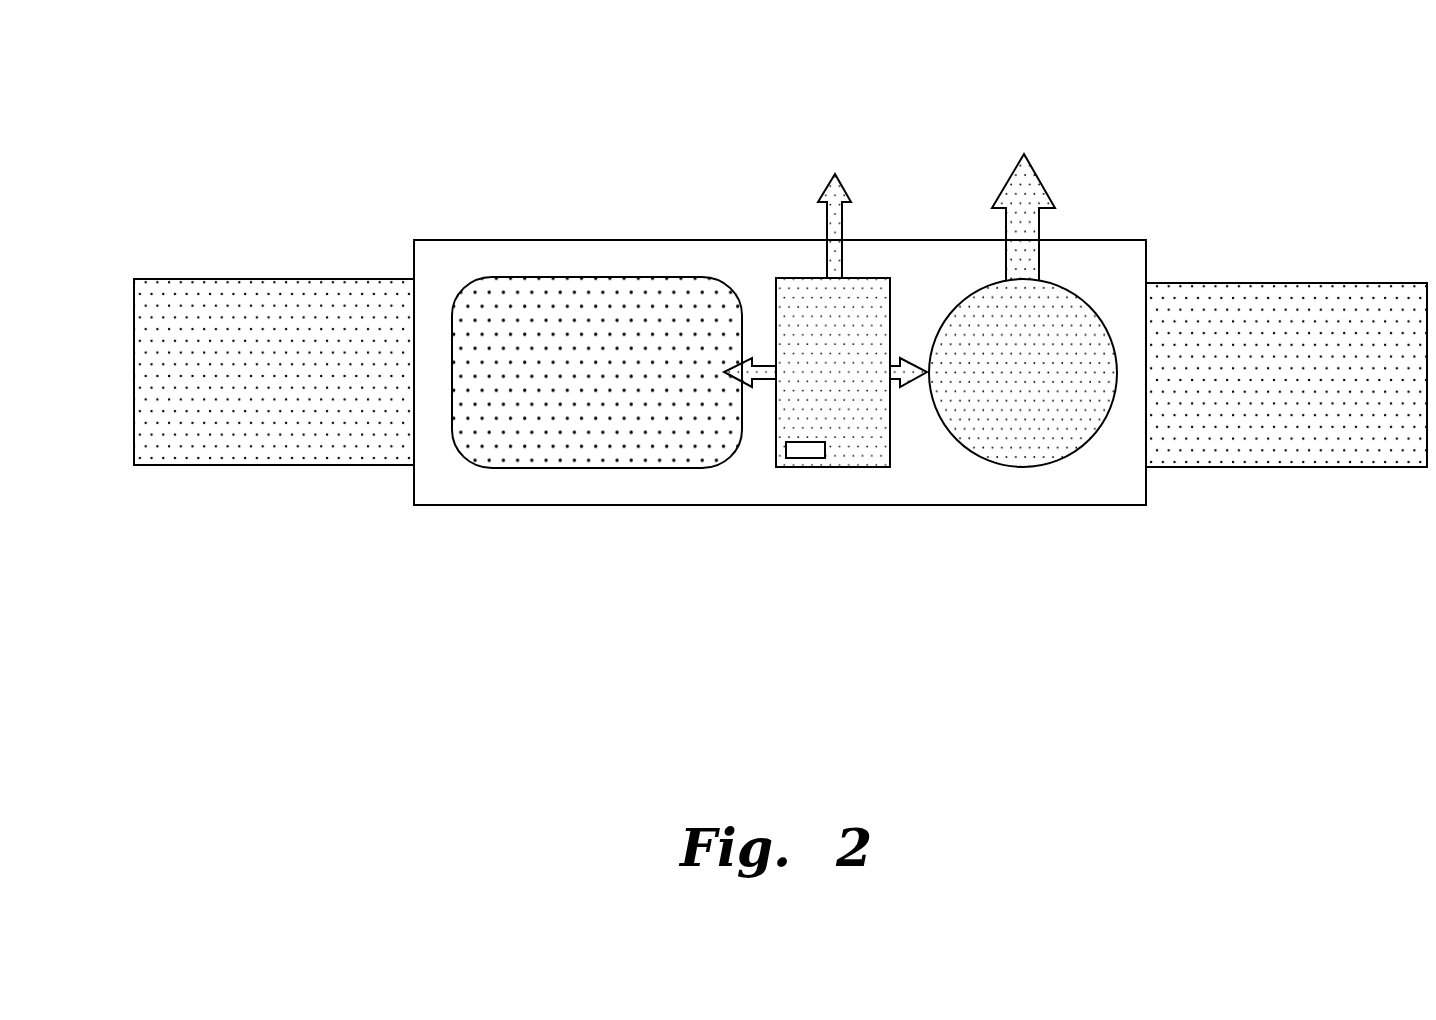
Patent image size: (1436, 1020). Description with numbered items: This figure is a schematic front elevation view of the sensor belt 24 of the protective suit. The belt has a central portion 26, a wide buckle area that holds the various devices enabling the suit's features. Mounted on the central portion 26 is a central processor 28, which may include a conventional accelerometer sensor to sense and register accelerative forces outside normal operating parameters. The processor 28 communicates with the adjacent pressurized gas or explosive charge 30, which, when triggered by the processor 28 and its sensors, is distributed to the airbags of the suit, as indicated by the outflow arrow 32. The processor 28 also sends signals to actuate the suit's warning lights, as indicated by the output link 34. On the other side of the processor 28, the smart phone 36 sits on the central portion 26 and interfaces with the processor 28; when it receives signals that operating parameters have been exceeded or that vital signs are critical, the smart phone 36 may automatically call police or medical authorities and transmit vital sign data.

The sensor belt 24 is at (366, 155).
The central portion 26 is at (752, 505).
The central processor 28 is at (866, 467).
The pressurized gas or explosive charge 30 is at (1027, 467).
The outflow arrow 32 is at (1042, 228).
The output link 34 is at (827, 213).
The smart phone 36 is at (572, 468).